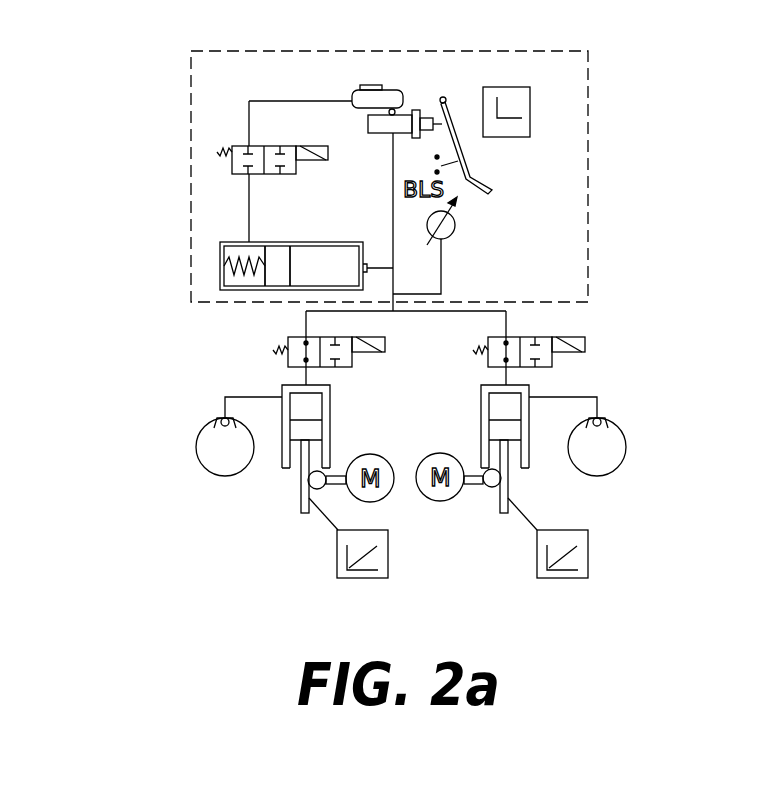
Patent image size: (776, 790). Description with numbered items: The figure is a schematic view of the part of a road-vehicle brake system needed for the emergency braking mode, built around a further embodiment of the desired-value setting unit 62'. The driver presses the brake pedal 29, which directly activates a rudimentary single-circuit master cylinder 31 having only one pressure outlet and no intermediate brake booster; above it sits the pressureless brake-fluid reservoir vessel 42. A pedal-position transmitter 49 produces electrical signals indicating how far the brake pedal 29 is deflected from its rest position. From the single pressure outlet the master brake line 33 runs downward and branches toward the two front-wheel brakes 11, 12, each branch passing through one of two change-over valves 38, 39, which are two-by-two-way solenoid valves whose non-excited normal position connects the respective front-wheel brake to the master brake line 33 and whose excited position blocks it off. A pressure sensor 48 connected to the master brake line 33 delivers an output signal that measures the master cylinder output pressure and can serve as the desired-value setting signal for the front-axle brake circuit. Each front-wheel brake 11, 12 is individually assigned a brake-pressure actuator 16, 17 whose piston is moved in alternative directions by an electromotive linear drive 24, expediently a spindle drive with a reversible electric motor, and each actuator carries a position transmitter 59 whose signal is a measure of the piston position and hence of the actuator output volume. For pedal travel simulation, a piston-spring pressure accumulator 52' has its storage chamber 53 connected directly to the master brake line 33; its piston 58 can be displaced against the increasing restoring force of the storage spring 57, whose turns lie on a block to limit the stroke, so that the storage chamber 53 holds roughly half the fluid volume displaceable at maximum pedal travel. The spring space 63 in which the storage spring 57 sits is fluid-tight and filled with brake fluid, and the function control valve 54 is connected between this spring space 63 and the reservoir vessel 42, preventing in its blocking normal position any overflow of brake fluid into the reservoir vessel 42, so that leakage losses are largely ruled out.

The front-wheel brake 11 is at (620, 452).
The front-wheel brake 12 is at (206, 446).
The brake-pressure actuator 16 is at (476, 384).
The brake-pressure actuator 17 is at (338, 405).
The electromotive linear drive 24 is at (296, 484).
The brake pedal 29 is at (482, 175).
The single-circuit master cylinder 31 is at (421, 107).
The master brake line 33 is at (393, 222).
The change-over valve 38 is at (548, 357).
The change-over valve 39 is at (273, 352).
The brake-fluid reservoir vessel 42 is at (352, 92).
The pressure sensor 48 is at (455, 229).
The pedal-position transmitter 49 is at (522, 112).
The pressure accumulator 52' is at (306, 230).
The storage chamber 53 is at (340, 262).
The function control valve 54 is at (232, 152).
The storage spring 57 is at (265, 290).
The piston 58 is at (274, 262).
The position transmitter 59 is at (388, 560).
The desired-value setting unit 62' is at (418, 176).
The spring space 63 is at (223, 252).